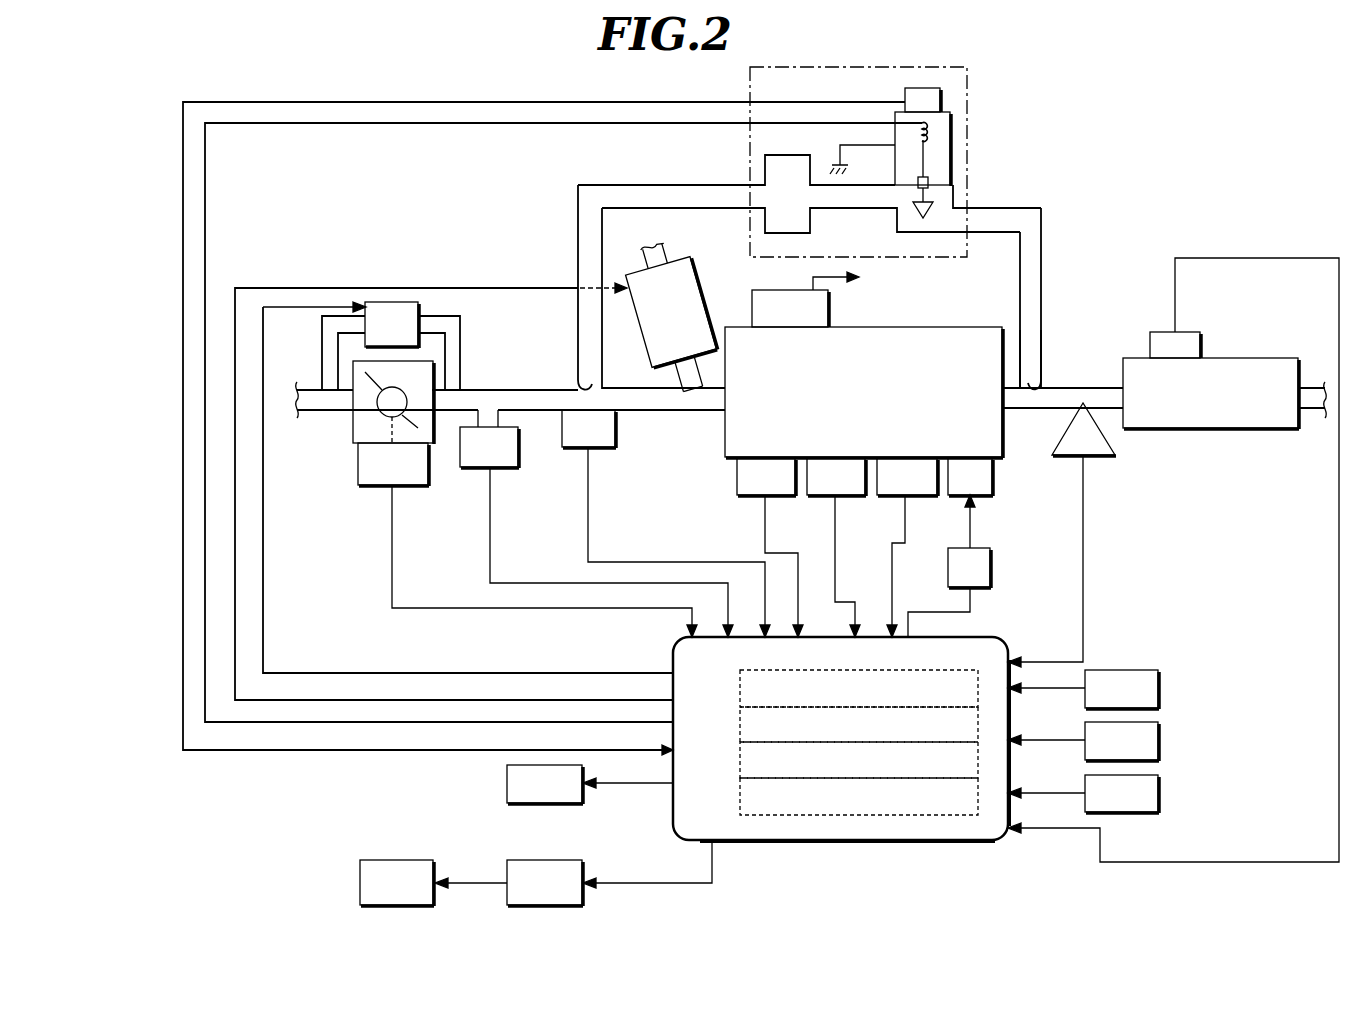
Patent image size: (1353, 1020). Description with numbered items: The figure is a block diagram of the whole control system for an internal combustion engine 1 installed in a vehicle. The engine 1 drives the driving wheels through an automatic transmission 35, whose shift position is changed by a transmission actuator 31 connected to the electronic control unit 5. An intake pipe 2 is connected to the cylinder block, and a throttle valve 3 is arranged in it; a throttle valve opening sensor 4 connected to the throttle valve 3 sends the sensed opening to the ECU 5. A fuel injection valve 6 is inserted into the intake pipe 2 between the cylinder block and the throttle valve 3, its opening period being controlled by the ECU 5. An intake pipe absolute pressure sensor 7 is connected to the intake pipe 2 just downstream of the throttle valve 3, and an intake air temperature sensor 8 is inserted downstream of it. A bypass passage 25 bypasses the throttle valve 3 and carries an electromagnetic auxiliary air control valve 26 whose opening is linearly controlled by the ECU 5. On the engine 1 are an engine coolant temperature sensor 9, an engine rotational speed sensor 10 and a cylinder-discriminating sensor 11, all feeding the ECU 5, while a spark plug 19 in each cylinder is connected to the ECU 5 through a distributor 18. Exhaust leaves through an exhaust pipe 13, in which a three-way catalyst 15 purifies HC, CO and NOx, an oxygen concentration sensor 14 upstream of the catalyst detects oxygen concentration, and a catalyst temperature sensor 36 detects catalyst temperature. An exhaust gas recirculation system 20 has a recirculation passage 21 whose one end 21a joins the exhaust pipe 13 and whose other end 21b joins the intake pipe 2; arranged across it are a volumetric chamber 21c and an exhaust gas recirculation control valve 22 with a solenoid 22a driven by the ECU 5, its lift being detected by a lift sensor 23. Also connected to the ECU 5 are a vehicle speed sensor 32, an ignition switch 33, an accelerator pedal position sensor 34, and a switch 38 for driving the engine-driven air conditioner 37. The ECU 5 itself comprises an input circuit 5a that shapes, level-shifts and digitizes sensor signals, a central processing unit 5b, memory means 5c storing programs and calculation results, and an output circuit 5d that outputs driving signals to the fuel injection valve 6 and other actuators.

The internal combustion engine 1 is at (920, 327).
The intake pipe 2 is at (505, 385).
The throttle valve 3 is at (372, 383).
The throttle valve opening sensor 4 is at (360, 485).
The electronic control unit 5 is at (870, 755).
The input circuit 5a is at (955, 672).
The central processing unit 5b is at (978, 728).
The memory means 5c is at (978, 760).
The output circuit 5d is at (978, 800).
The fuel injection valve 6 is at (696, 262).
The intake pipe absolute pressure sensor 7 is at (478, 468).
The intake air temperature sensor 8 is at (600, 447).
The engine coolant temperature sensor 9 is at (765, 500).
The engine rotational speed sensor 10 is at (835, 500).
The cylinder-discriminating sensor 11 is at (905, 500).
The exhaust pipe 13 is at (1025, 412).
The oxygen concentration sensor 14 is at (1100, 458).
The three-way catalyst 15 is at (1220, 358).
The distributor 18 is at (992, 575).
The spark plug 19 is at (985, 497).
The exhaust gas recirculation system 20 is at (967, 195).
The exhaust gas recirculation passage 21 is at (1043, 240).
The one end of exhaust gas recirculation passage 21a is at (1043, 390).
The other end of exhaust gas recirculation passage 21b is at (578, 385).
The volumetric chamber 21c is at (765, 158).
The exhaust gas recirculation control valve 22 is at (952, 155).
The solenoid 22a is at (926, 128).
The lift sensor 23 is at (940, 100).
The bypass passage 25 is at (460, 330).
The auxiliary air control valve 26 is at (420, 305).
The transmission actuator 31 is at (505, 783).
The vehicle speed sensor 32 is at (1160, 690).
The ignition switch 33 is at (1160, 742).
The accelerator pedal position sensor 34 is at (1160, 795).
The transmission 35 is at (762, 290).
The catalyst temperature sensor 36 is at (1178, 332).
The air conditioner 37 is at (395, 858).
The switch for driving the air conditioner 38 is at (528, 858).